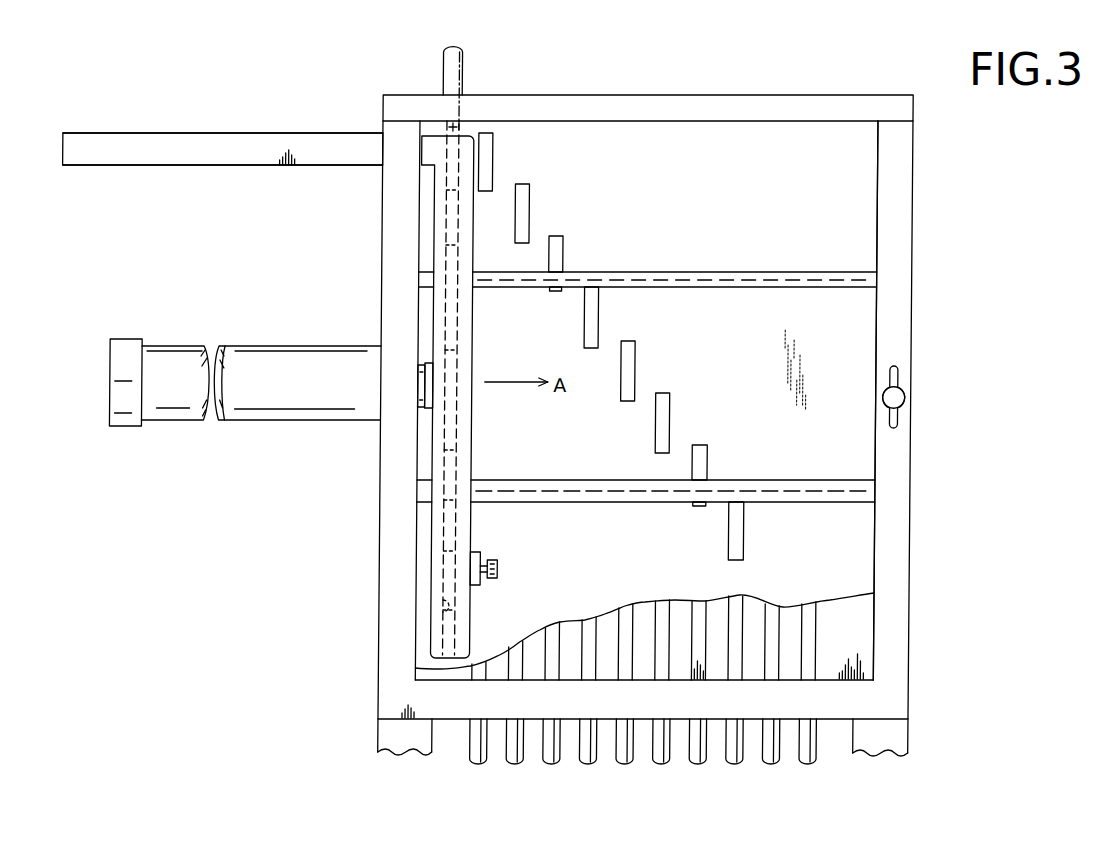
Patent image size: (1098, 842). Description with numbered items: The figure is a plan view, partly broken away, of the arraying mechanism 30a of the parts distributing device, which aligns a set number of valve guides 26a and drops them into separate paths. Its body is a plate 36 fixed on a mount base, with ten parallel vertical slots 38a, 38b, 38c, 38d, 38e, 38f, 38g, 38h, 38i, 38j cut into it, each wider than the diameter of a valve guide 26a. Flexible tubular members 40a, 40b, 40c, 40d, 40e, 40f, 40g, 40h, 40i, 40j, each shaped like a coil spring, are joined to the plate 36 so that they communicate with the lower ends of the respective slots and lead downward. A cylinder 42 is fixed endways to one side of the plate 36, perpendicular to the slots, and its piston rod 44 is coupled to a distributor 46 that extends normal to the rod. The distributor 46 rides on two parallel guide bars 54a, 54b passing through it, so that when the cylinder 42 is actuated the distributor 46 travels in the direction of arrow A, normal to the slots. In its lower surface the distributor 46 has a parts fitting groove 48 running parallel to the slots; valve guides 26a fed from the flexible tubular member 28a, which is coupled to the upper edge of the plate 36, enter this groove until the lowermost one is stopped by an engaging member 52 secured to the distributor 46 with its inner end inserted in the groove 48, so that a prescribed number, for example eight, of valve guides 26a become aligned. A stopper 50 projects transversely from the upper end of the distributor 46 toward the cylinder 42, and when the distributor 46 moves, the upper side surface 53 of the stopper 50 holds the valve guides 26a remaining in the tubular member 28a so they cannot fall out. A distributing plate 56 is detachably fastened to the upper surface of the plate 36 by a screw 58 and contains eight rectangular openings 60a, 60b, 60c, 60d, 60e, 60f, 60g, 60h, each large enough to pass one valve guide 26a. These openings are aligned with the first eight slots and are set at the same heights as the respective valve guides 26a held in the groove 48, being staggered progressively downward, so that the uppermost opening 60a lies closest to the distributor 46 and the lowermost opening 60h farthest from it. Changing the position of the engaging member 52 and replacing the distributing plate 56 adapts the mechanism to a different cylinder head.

The valve guide 26a is at (460, 126).
The flexible tubular member 28a is at (456, 72).
The arraying mechanism 30a is at (860, 88).
The plate 36 is at (855, 625).
The slot 38a is at (484, 672).
The slot 38b is at (525, 662).
The slot 38c is at (560, 648).
The slot 38d is at (595, 640).
The slot 38e is at (628, 655).
The slot 38f is at (666, 655).
The slot 38g is at (702, 636).
The slot 38h is at (740, 622).
The slot 38i is at (774, 642).
The slot 38j is at (815, 630).
The flexible tubular member 40a is at (482, 757).
The flexible tubular member 40b is at (521, 755).
The flexible tubular member 40c is at (557, 752).
The flexible tubular member 40d is at (594, 752).
The flexible tubular member 40e is at (630, 752).
The flexible tubular member 40f is at (664, 755).
The flexible tubular member 40g is at (702, 757).
The flexible tubular member 40h is at (739, 757).
The flexible tubular member 40i is at (776, 757).
The flexible tubular member 40j is at (813, 758).
The cylinder 42 is at (290, 405).
The piston rod 44 is at (422, 385).
The distributor 46 is at (472, 428).
The parts fitting groove 48 is at (446, 612).
The stopper 50 is at (254, 150).
The engaging member 52 is at (506, 563).
The upper side surface 53 is at (322, 133).
The guide bar 54a is at (752, 283).
The guide bar 54b is at (601, 487).
The distributing plate 56 is at (863, 221).
The screw 58 is at (900, 395).
The rectangular opening 60a is at (494, 150).
The rectangular opening 60b is at (531, 198).
The rectangular opening 60c is at (565, 252).
The rectangular opening 60d is at (601, 316).
The rectangular opening 60e is at (638, 366).
The rectangular opening 60f is at (673, 412).
The rectangular opening 60g is at (711, 460).
The rectangular opening 60h is at (748, 530).